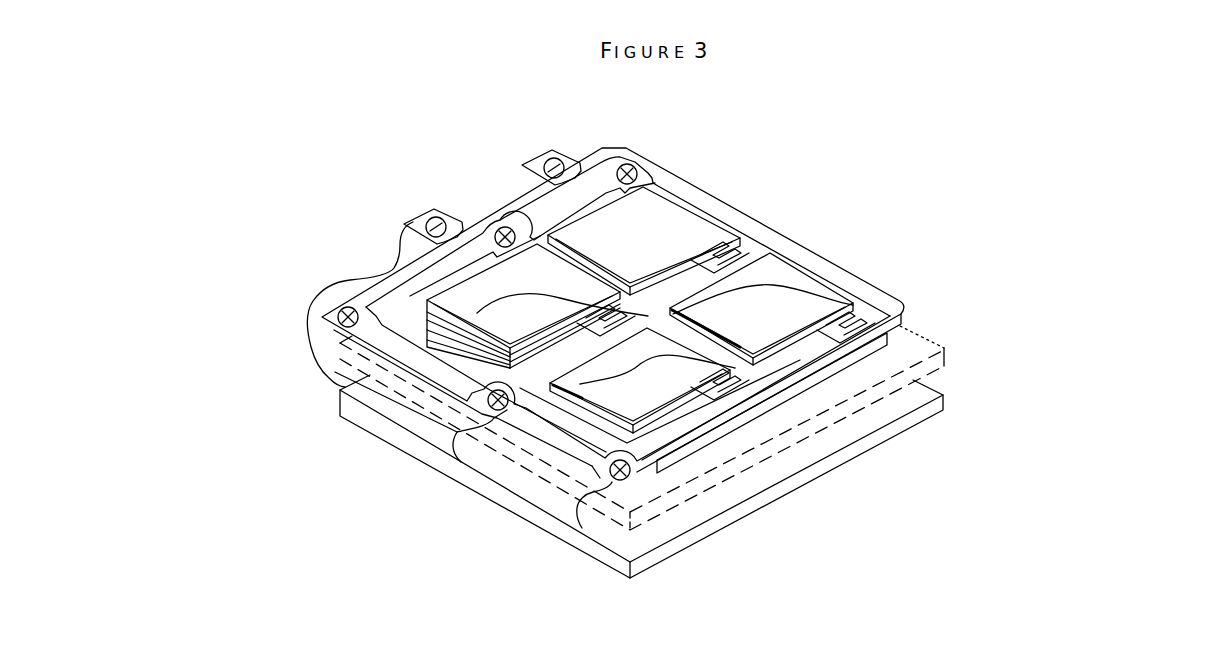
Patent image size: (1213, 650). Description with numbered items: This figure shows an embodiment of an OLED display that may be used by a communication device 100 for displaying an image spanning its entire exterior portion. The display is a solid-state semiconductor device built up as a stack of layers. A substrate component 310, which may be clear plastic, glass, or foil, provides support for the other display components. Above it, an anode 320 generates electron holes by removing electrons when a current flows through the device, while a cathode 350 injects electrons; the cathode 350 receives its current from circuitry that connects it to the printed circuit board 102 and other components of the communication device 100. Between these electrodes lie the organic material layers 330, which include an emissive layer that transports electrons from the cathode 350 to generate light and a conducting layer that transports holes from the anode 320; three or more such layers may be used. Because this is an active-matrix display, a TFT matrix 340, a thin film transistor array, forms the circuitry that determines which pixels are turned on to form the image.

The communication device 100 is at (915, 373).
The printed circuit board 102 is at (895, 430).
The substrate component 310 is at (833, 371).
The anode 320 is at (628, 395).
The organic material layers 330 is at (505, 313).
The TFT matrix 340 is at (383, 299).
The cathode 350 is at (517, 200).